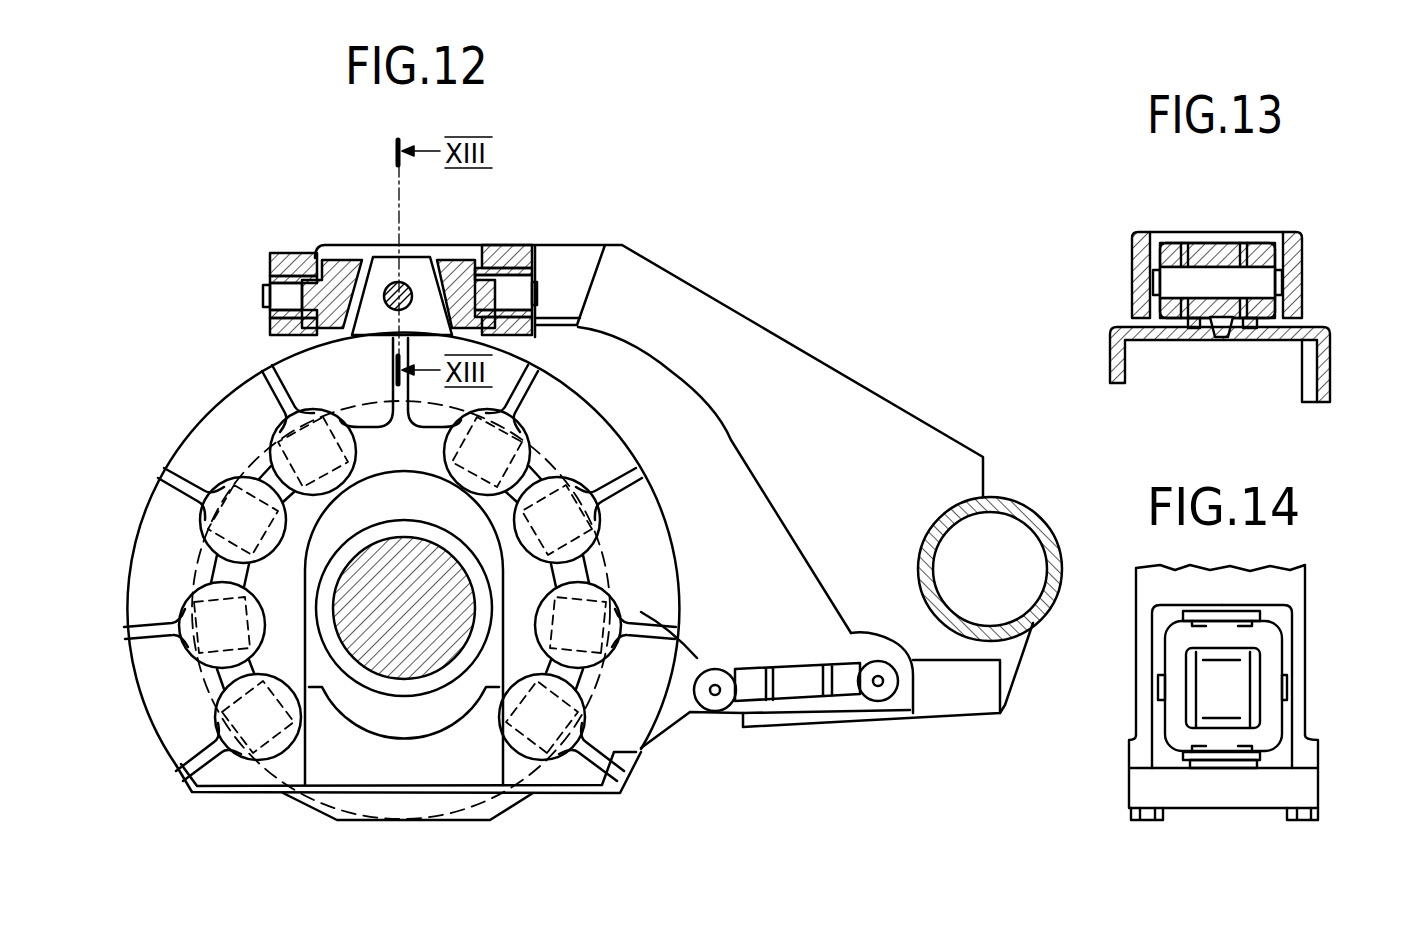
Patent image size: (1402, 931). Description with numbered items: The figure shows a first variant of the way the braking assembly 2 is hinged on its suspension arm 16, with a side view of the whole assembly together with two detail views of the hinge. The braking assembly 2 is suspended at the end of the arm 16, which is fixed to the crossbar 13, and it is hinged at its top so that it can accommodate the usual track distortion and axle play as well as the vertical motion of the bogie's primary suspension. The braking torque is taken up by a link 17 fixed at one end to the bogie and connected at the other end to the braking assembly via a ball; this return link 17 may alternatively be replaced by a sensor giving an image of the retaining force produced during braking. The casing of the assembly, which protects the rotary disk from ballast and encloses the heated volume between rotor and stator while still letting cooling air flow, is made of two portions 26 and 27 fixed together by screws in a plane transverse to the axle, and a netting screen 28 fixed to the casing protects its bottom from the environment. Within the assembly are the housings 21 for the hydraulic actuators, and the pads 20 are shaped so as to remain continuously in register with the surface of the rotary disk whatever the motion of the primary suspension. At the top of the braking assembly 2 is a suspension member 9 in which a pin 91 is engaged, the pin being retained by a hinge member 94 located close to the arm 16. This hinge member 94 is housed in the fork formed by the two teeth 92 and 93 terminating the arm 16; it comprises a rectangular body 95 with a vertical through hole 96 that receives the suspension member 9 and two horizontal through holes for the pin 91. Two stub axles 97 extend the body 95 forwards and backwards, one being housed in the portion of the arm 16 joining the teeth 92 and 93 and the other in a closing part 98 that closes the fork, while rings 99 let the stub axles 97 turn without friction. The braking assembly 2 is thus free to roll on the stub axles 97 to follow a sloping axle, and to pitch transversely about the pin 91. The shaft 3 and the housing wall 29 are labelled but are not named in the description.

In FIG. 12, the braking assembly 2 is at (184, 390).
In FIG. 12, the shaft 3 is at (437, 603).
In FIG. 12, the suspension member 9 is at (410, 258).
In FIG. 13, the suspension member 9 is at (1213, 253).
In FIG. 14, the suspension member 9 is at (1232, 705).
In FIG. 12, the crossbar 13 is at (1017, 497).
In FIG. 12, the arm 16 is at (722, 308).
In FIG. 12, the link 17 is at (732, 707).
In FIG. 12, the pads 20 is at (252, 462).
In FIG. 12, the housings 21 is at (583, 490).
In FIG. 13, the casing portion 26 is at (1113, 373).
In FIG. 13, the casing portion 27 is at (1325, 358).
In FIG. 12, the netting screen 28 is at (350, 800).
In FIG. 12, the housing wall 29 is at (167, 530).
In FIG. 12, the pin 91 is at (383, 282).
In FIG. 13, the pin 91 is at (1175, 280).
In FIG. 13, the tooth 92 is at (1133, 247).
In FIG. 14, the tooth 92 is at (1145, 645).
In FIG. 13, the tooth 93 is at (1300, 250).
In FIG. 14, the tooth 93 is at (1300, 637).
In FIG. 12, the hinge member 94 is at (470, 252).
In FIG. 12, the rectangular body 95 is at (330, 262).
In FIG. 13, the rectangular body 95 is at (1255, 250).
In FIG. 14, the rectangular body 95 is at (1265, 637).
In FIG. 12, the vertical through hole 96 is at (455, 252).
In FIG. 12, the stub axles 97 is at (277, 302).
In FIG. 12, the closing part 98 is at (283, 253).
In FIG. 14, the closing part 98 is at (1255, 790).
In FIG. 12, the rings 99 is at (523, 267).